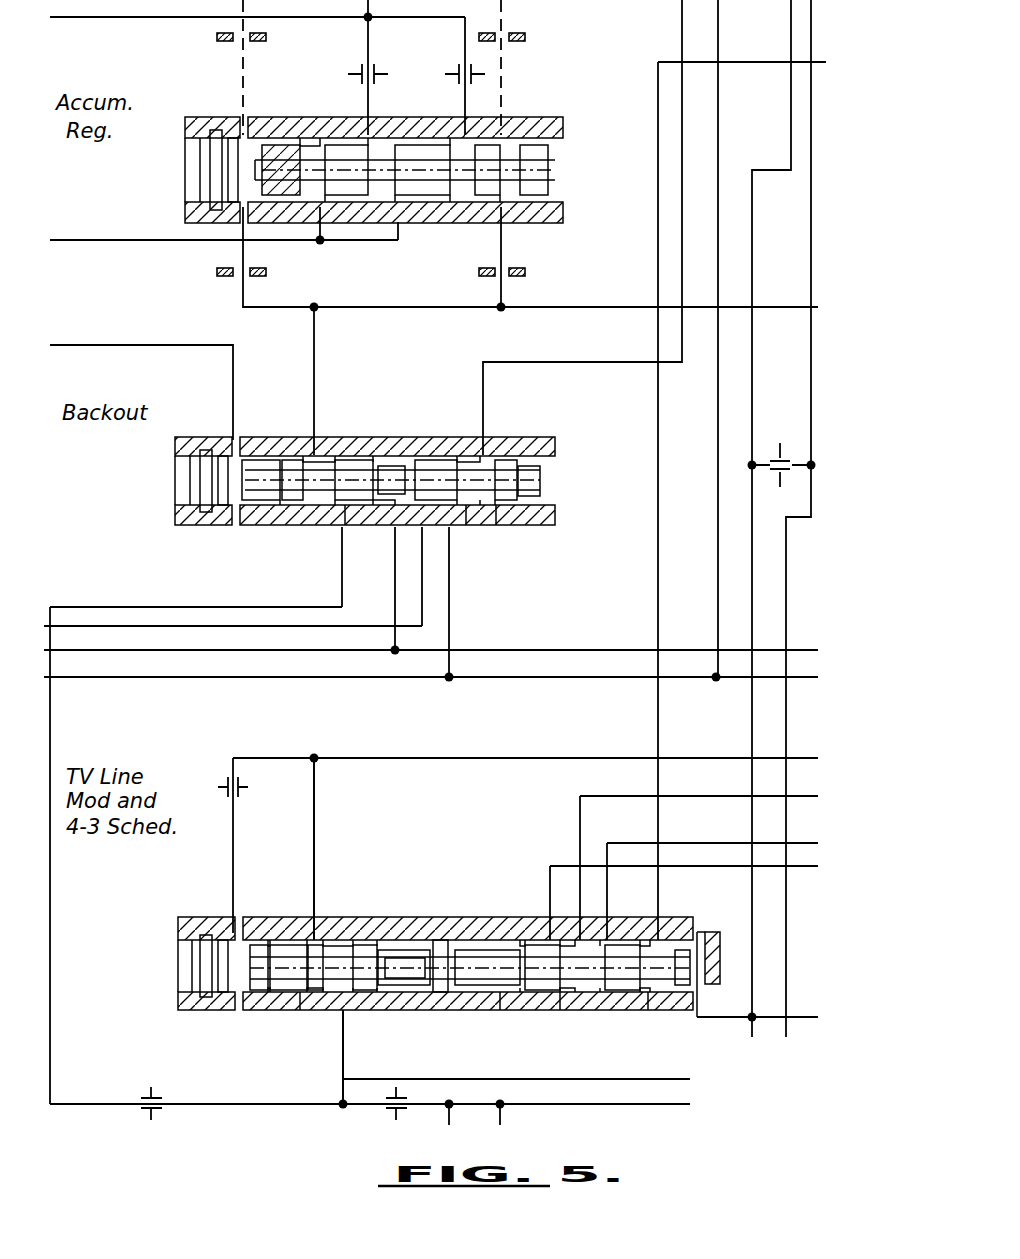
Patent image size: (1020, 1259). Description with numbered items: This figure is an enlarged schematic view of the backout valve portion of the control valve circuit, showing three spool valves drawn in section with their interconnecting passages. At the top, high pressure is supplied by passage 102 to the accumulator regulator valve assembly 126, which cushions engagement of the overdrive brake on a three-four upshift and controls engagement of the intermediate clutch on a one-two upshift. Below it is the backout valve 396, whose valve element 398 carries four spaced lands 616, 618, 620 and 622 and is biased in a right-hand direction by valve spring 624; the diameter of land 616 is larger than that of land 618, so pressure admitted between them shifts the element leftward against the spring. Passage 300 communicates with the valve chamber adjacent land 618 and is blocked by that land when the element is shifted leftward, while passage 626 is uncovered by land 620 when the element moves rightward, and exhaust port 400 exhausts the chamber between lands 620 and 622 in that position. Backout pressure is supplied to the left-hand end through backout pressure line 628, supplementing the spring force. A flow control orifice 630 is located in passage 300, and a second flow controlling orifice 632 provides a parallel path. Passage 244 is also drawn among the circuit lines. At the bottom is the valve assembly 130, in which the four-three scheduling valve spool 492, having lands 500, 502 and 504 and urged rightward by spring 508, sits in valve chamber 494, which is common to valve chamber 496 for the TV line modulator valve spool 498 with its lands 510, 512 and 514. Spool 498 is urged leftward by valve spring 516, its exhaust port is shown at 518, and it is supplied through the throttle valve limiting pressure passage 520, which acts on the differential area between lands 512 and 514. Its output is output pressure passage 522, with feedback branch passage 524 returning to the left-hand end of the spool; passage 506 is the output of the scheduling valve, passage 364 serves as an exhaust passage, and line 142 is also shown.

The passage 102 is at (105, 22).
The accumulator regulator valve assembly 126 is at (183, 181).
The backout pressure line 628 is at (138, 340).
The valve land 616 is at (296, 460).
The valve land 618 is at (360, 460).
The valve land 620 is at (430, 460).
The valve land 622 is at (508, 460).
The valve spring 624 is at (265, 505).
The backout valve 396 is at (346, 505).
The valve element 398 is at (468, 512).
The exhaust port 400 is at (500, 512).
The passage 300 is at (84, 607).
The passage 626 is at (203, 626).
The fluid line 244 is at (128, 678).
The feedback branch passage 524 is at (257, 750).
The output pressure passage 522 is at (320, 770).
The output pressure passage 506 is at (632, 794).
The spring 508 is at (655, 778).
The passage 364 is at (686, 842).
The TV line modulator valve spool 498 is at (290, 945).
The valve land 512 is at (318, 945).
The valve assembly 130 is at (448, 940).
The valve spring 516 is at (405, 950).
The valve land 500 is at (542, 945).
The valve land 502 is at (622, 945).
The valve land 504 is at (682, 950).
The valve land 510 is at (262, 992).
The exhaust port 518 is at (300, 995).
The valve land 514 is at (362, 992).
The valve chamber 496 is at (292, 1010).
The throttle valve limiting pressure passage 520 is at (345, 1062).
The valve chamber 494 is at (560, 993).
The 4-3 scheduling valve spool 492 is at (600, 985).
The fluid line 142 is at (528, 1079).
The flow control orifice 630 is at (143, 1112).
The flow controlling orifice 632 is at (385, 1112).